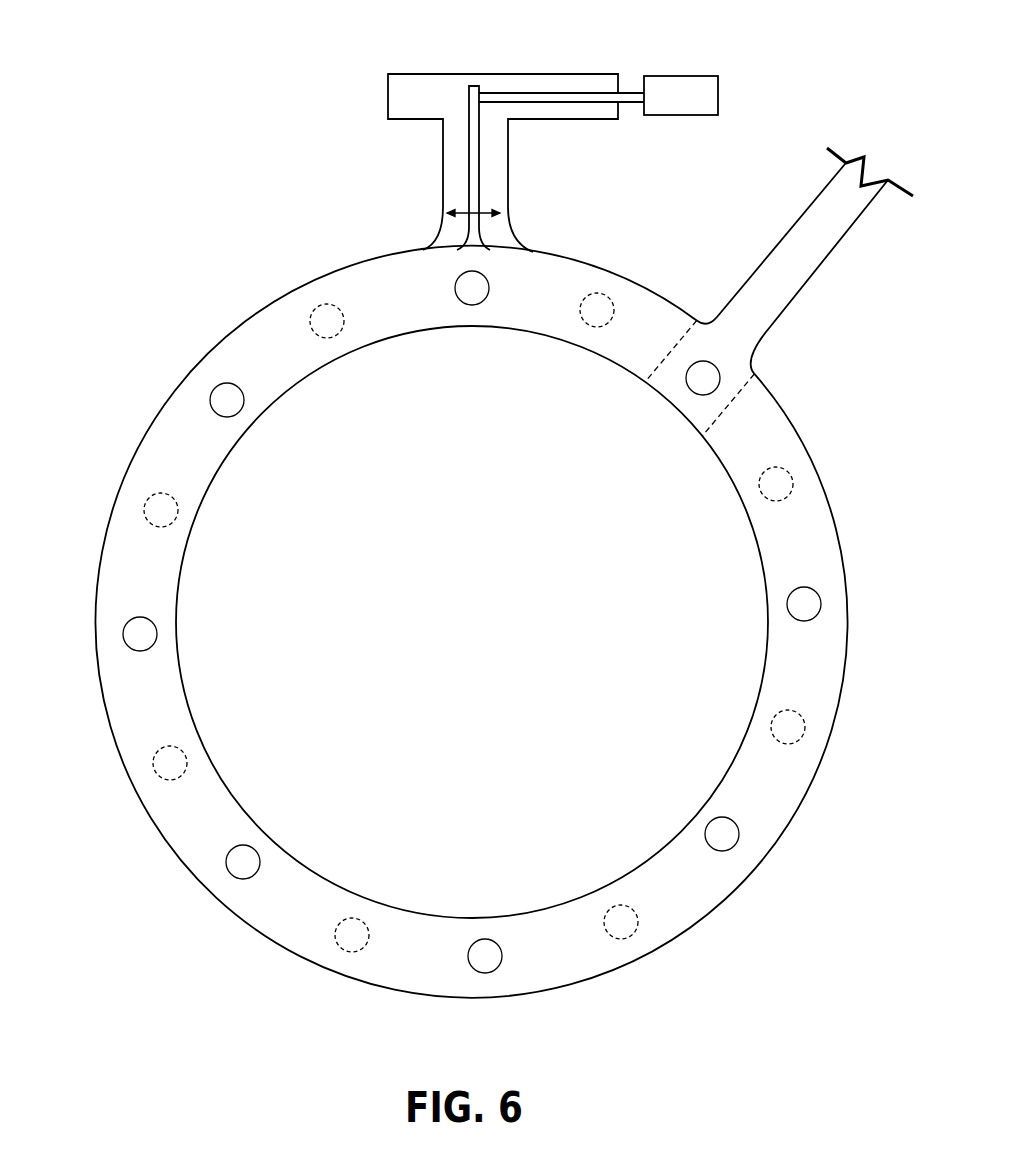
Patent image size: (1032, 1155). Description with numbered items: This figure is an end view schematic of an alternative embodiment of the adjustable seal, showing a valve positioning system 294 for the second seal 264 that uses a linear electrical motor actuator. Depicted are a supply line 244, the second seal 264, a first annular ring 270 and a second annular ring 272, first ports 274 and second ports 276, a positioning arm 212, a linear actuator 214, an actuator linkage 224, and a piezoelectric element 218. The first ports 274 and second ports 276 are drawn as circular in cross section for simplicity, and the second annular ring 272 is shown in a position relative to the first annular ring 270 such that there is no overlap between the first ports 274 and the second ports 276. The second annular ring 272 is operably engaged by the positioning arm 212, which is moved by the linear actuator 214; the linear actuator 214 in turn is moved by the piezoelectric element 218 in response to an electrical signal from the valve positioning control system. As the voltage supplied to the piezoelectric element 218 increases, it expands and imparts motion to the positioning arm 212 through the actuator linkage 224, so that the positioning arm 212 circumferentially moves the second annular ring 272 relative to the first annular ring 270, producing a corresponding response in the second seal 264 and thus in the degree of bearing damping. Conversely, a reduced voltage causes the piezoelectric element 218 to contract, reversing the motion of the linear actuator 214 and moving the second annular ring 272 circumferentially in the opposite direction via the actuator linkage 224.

The valve positioning system 294 is at (260, 90).
The linear actuator 214 is at (388, 74).
The actuator linkage 224 is at (570, 92).
The piezoelectric element 218 is at (691, 94).
The positioning arm 212 is at (476, 166).
The supply line 244 is at (787, 240).
The first annular ring 270 is at (270, 340).
The first ports 274 is at (225, 402).
The second ports 276 is at (157, 512).
The second annular ring 272 is at (140, 567).
The second seal 264 is at (189, 958).